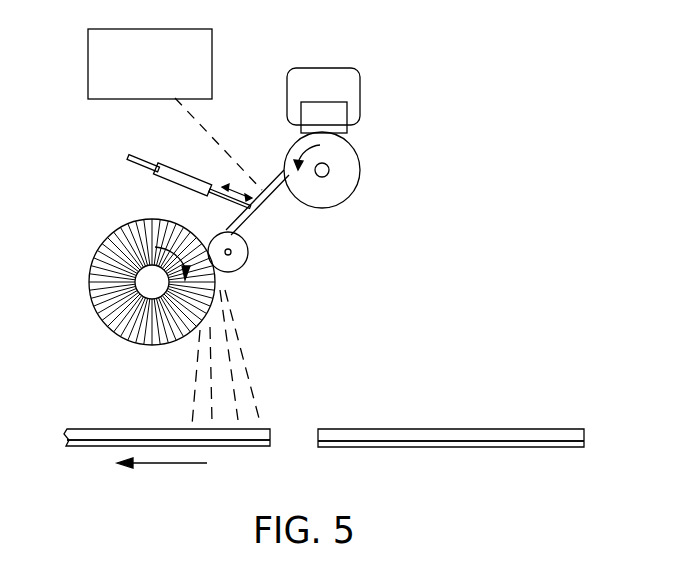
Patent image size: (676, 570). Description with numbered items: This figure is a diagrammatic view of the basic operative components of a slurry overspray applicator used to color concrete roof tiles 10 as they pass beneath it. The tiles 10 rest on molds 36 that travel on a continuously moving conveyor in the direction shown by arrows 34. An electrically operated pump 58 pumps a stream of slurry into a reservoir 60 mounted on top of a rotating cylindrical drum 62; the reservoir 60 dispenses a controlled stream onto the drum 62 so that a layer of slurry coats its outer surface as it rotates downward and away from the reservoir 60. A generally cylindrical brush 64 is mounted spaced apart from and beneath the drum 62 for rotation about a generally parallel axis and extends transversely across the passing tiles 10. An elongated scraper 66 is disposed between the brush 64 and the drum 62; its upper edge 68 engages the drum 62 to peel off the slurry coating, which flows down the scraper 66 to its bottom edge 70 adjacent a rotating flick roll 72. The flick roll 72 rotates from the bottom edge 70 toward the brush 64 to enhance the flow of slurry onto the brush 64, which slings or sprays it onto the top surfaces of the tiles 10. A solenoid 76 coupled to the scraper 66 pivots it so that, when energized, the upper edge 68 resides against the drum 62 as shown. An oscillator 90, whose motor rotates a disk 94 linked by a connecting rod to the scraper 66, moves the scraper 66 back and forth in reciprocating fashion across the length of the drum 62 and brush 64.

The concrete roof tile 10 is at (110, 430).
The arrows 34 is at (160, 465).
The mold 36 is at (232, 447).
The pump 58 is at (337, 77).
The reservoir 60 is at (340, 112).
The cylindrical drum 62 is at (345, 178).
The cylindrical brush 64 is at (98, 313).
The scraper 66 is at (255, 205).
The upper edge 68 is at (283, 172).
The bottom edge 70 is at (222, 236).
The flick roll 72 is at (240, 260).
The solenoid 76 is at (178, 172).
The oscillator 90 is at (88, 63).
The disk 94 is at (208, 132).